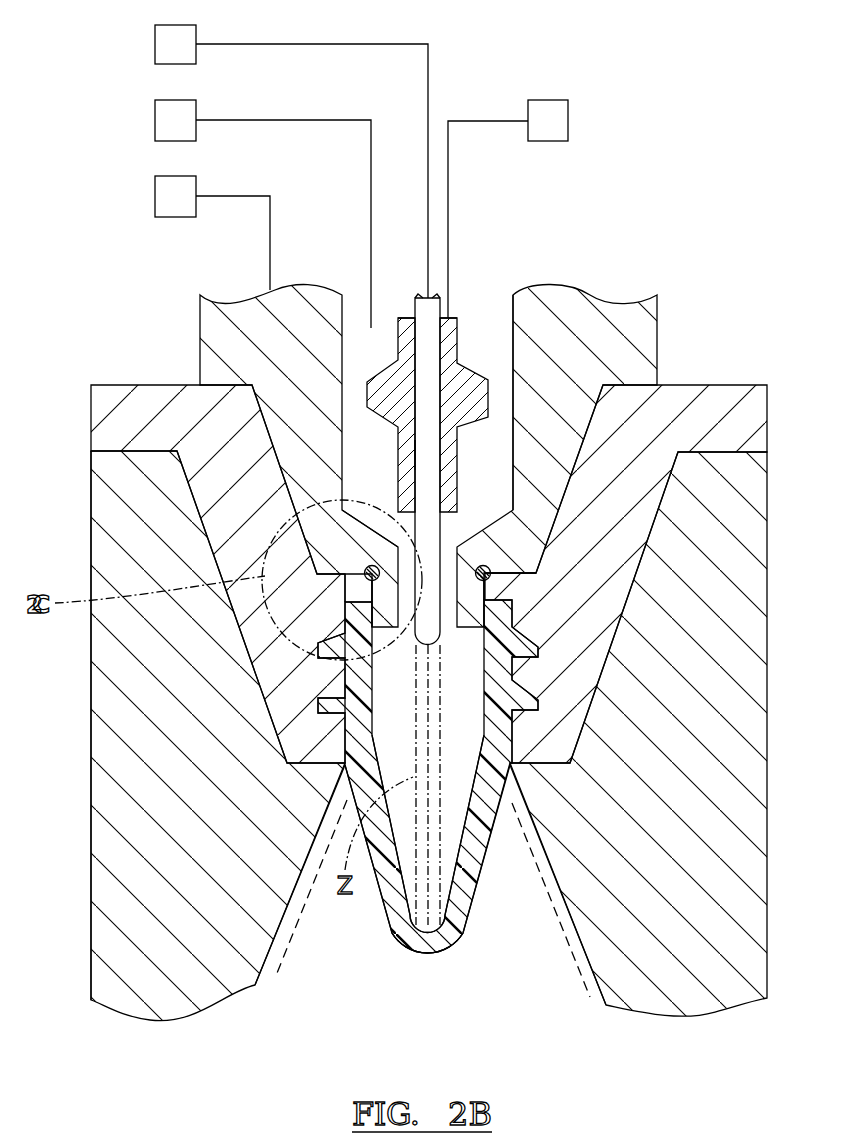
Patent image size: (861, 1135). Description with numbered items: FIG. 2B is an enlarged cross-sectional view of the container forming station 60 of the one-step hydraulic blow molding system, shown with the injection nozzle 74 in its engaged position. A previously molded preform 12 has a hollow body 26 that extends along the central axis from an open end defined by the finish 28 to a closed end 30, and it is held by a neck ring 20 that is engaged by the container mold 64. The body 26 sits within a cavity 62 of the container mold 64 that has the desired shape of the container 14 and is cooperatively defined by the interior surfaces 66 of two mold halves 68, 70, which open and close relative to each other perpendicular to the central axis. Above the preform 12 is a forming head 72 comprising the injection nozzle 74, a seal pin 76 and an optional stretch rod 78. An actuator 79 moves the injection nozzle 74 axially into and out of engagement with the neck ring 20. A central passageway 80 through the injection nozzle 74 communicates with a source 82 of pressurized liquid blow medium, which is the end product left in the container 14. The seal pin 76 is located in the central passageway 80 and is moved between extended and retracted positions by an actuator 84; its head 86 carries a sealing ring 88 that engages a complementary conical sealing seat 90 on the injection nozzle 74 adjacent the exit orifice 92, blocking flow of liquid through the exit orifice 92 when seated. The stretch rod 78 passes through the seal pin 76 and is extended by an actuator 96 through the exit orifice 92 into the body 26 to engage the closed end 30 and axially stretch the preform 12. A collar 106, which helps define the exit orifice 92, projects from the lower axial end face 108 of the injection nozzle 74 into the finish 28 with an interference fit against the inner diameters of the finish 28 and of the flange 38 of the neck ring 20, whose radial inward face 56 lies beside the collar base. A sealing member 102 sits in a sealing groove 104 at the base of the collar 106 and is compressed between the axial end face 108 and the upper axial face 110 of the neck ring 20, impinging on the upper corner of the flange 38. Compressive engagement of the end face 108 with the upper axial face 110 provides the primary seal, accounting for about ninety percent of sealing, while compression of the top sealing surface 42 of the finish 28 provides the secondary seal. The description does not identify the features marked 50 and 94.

The preform 12 is at (510, 793).
The container 14 is at (295, 917).
The neck ring 20 is at (110, 428).
The hollow body 26 is at (488, 863).
The finish 28 is at (513, 675).
The closed end 30 is at (540, 648).
The flange 38 is at (335, 635).
The top sealing surface 42 is at (502, 597).
The tip outlet 50 is at (425, 956).
The radial inward face 56 is at (373, 585).
The container forming station 60 is at (706, 93).
The cavity 62 is at (514, 948).
The container mold 64 is at (80, 897).
The interior surfaces 66 is at (583, 950).
The mold half 68 is at (110, 853).
The mold half 70 is at (687, 1000).
The forming head 72 is at (612, 300).
The injection nozzle 74 is at (625, 355).
The seal pin 76 is at (468, 280).
The stretch rod 78 is at (427, 348).
The actuator 79 is at (155, 196).
The central passageway 80 is at (476, 323).
The source 82 is at (155, 118).
The actuator 84 is at (551, 112).
The head 86 is at (383, 395).
The sealing ring 88 is at (423, 450).
The sealing seat 90 is at (497, 512).
The exit orifice 92 is at (395, 540).
The valve pin shaft 94 is at (427, 454).
The actuator 96 is at (155, 42).
The sealing member 102 is at (483, 565).
The sealing groove 104 is at (366, 567).
The collar 106 is at (477, 603).
The lower axial end face 108 is at (345, 602).
The upper axial face 110 is at (317, 574).